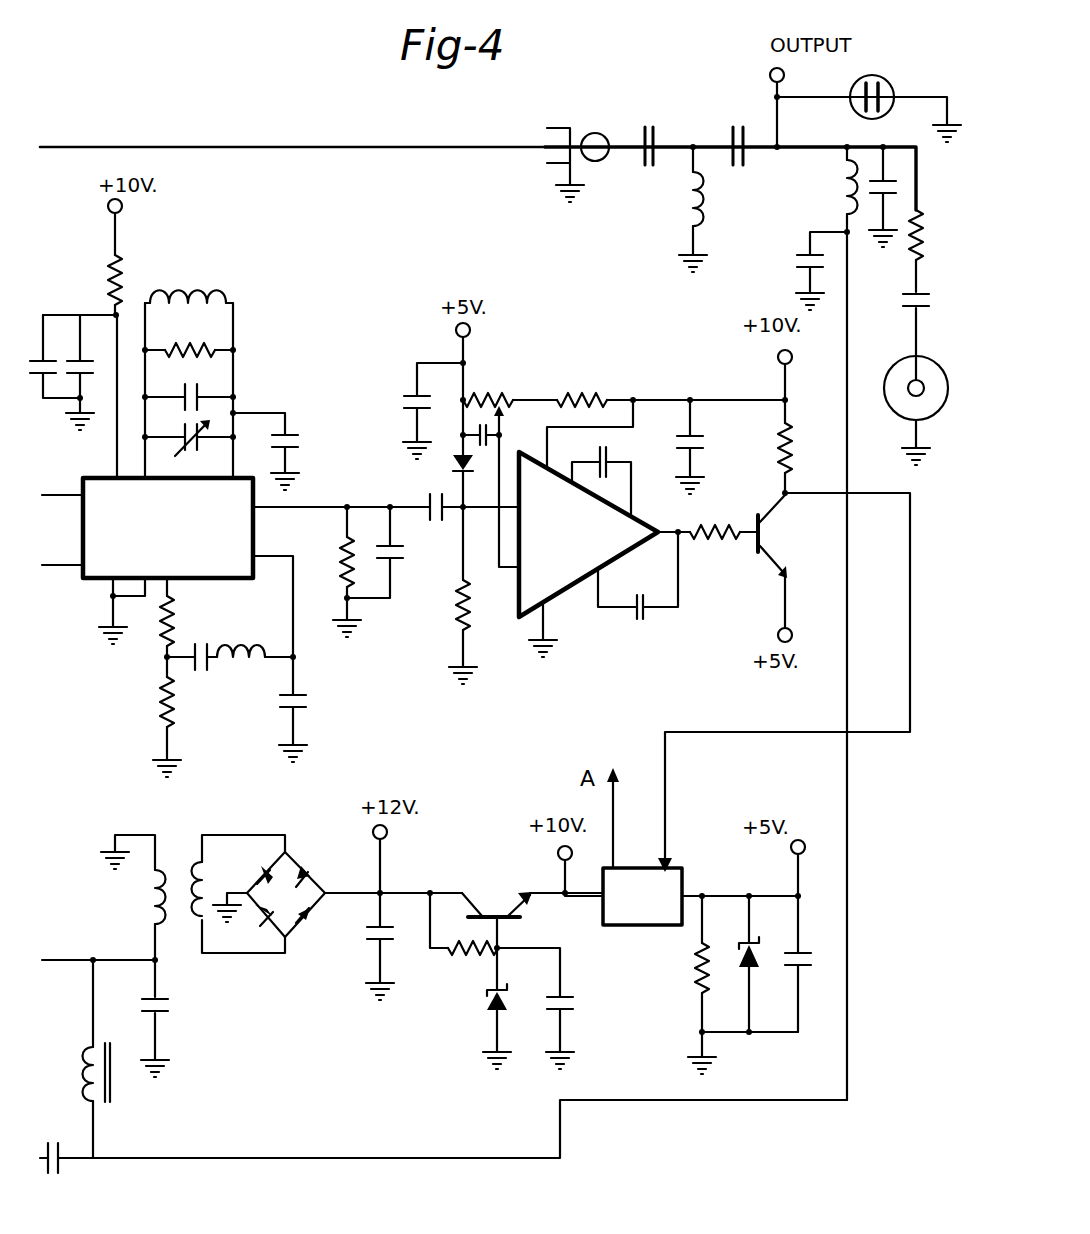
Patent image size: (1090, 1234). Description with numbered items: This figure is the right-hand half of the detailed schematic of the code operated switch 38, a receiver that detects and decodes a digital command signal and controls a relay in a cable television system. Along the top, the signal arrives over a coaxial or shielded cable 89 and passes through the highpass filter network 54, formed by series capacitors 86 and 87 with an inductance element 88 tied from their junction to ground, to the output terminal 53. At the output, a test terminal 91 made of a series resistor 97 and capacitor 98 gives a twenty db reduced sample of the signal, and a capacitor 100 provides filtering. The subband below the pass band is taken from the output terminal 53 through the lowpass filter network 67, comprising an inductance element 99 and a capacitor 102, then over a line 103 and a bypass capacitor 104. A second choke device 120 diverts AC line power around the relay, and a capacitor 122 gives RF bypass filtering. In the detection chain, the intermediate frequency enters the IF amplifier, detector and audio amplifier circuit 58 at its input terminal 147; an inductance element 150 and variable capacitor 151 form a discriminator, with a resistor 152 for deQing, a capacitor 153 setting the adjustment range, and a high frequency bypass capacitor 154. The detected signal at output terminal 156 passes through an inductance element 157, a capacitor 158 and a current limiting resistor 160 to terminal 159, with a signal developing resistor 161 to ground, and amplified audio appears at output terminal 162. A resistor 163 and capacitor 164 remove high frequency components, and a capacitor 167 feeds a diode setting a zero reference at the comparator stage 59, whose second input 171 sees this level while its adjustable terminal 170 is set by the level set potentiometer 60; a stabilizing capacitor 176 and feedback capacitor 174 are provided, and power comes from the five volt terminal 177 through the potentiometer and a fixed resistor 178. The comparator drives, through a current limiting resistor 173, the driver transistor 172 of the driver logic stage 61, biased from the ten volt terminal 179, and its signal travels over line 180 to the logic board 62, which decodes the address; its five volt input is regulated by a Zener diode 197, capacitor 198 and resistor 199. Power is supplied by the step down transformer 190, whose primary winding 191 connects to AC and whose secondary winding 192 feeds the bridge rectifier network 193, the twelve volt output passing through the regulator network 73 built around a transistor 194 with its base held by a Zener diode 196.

The code operated switch 38 is at (242, 144).
The coaxial or shielded cable 89 is at (562, 128).
The capacitor 86 is at (648, 126).
The highpass filter network 54 is at (686, 102).
The output terminal 53 is at (770, 79).
The inductance element 88 is at (690, 202).
The capacitor 87 is at (734, 126).
The inductance element 99 is at (845, 187).
The lowpass filter network 67 is at (798, 204).
The capacitor 102 is at (806, 253).
The capacitor 100 is at (897, 182).
The resistor 97 is at (912, 248).
The capacitor 98 is at (908, 305).
The test terminal 91 is at (892, 370).
The input terminal 147 is at (46, 400).
The inductance element 150 is at (198, 300).
The resistor 152 is at (215, 349).
The capacitor 153 is at (206, 396).
The variable capacitor 151 is at (228, 428).
The high frequency bypass capacitor 154 is at (296, 438).
The IF amplifier, detector, and audio frequency amplifier circuit 58 is at (184, 528).
The terminal 159 is at (172, 597).
The current limiting resistor 160 is at (160, 632).
The signal developing resistor 161 is at (160, 714).
The inductance element 157 is at (252, 650).
The capacitor 158 is at (205, 670).
The output terminal 156 is at (258, 556).
The output terminal 162 is at (290, 507).
The resistor 163 is at (340, 570).
The capacitor 164 is at (393, 565).
The capacitor 167 is at (440, 521).
The second input 171 is at (492, 510).
The 5 volt terminal 177 is at (471, 331).
The level set potentiometer 60 is at (495, 396).
The fixed resistor 178 is at (578, 393).
The stabilizing capacitor 176 is at (607, 458).
The comparator stage 59 is at (588, 547).
The adjustable terminal 170 is at (514, 574).
The current limiting resistor 173 is at (702, 545).
The feedback capacitor 174 is at (628, 612).
The driver logic stage 61 is at (763, 510).
The driver transistor 172 is at (770, 552).
The 10 volt terminal 179 is at (778, 358).
The line 180 is at (738, 731).
The logic board 62 is at (684, 874).
The resistor 199 is at (698, 972).
The Zener diode 197 is at (752, 980).
The capacitor 198 is at (800, 950).
The step down transformer 190 is at (184, 828).
The primary winding 191 is at (145, 906).
The capacitor 122 is at (168, 998).
The second choke device 120 is at (112, 1092).
The line 103 is at (566, 1145).
The bypass capacitor 104 is at (62, 1166).
The secondary winding 192 is at (212, 880).
The bridge rectifier network 193 is at (306, 862).
The regulator network 73 is at (490, 876).
The transistor 194 is at (516, 919).
The Zener diode 196 is at (486, 1006).